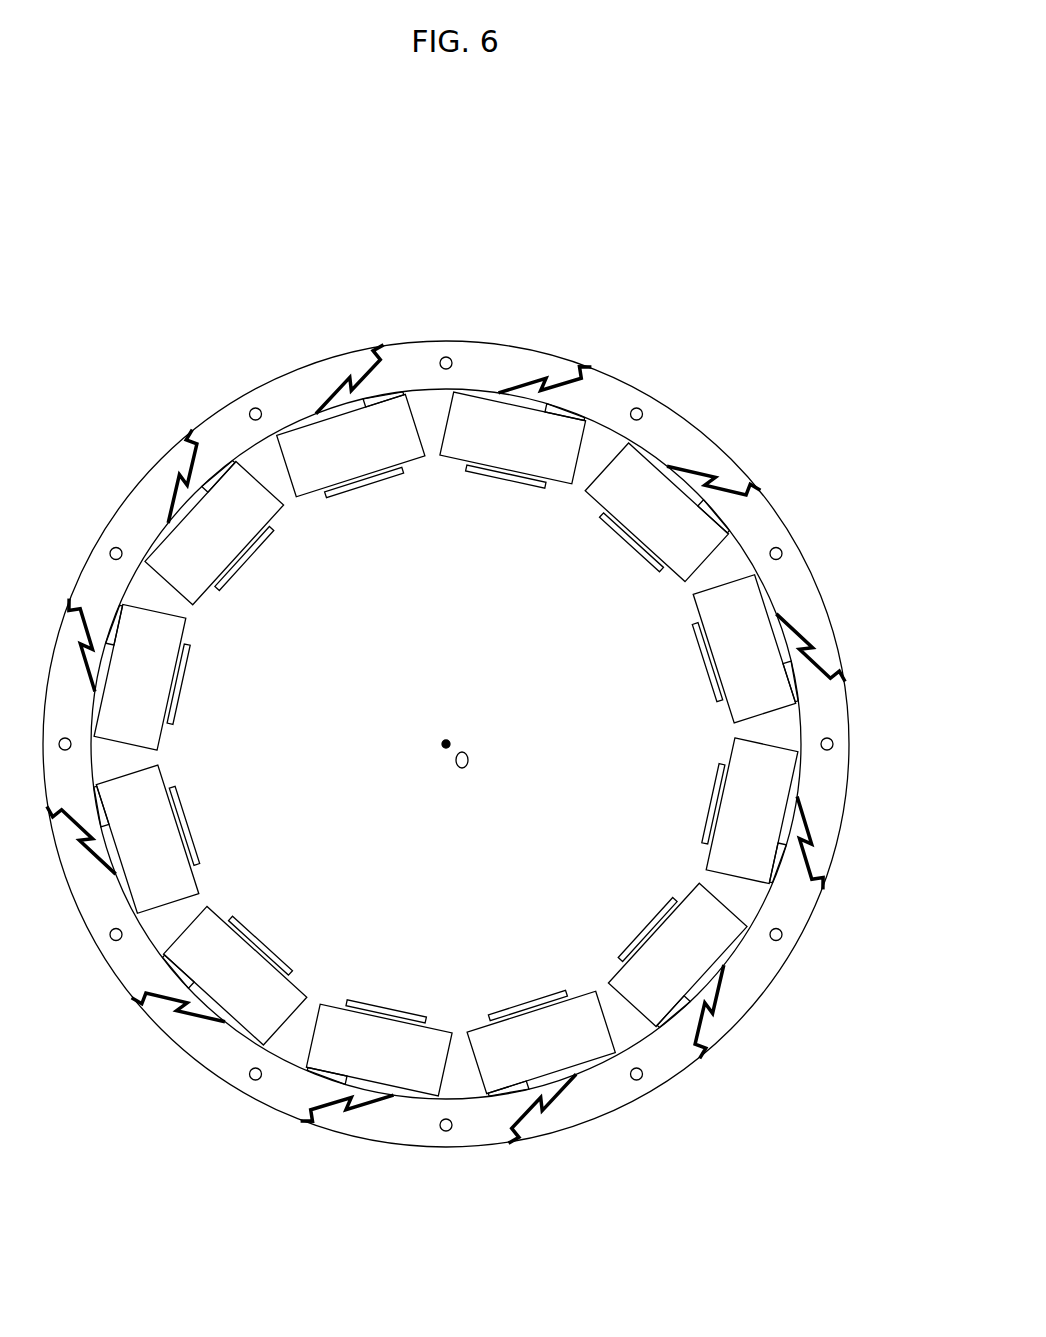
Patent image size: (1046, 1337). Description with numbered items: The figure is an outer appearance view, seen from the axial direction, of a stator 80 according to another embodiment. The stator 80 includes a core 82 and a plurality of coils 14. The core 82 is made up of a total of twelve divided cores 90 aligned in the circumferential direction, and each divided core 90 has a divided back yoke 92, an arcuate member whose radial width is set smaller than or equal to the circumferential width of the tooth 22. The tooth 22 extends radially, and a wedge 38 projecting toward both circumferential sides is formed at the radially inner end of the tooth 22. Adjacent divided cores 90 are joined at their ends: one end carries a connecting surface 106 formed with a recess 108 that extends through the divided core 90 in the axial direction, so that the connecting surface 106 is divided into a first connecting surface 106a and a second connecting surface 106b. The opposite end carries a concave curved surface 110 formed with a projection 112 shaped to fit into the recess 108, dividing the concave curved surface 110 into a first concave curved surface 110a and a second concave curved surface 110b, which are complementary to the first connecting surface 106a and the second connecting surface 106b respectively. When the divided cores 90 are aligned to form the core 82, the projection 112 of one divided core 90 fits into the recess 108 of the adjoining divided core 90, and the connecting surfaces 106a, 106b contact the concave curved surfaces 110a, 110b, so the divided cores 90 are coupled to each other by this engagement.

The stator 80 is at (826, 101).
The core 82 is at (448, 300).
The divided core 90 is at (656, 390).
The divided back yoke 92 is at (282, 400).
The connecting surface 106 is at (765, 433).
The first connecting surface 106a is at (797, 630).
The second connecting surface 106b is at (843, 663).
The recess 108 is at (580, 405).
The concave curved surface 110 is at (238, 240).
The first concave curved surface 110a is at (342, 395).
The second concave curved surface 110b is at (388, 342).
The projection 112 is at (580, 405).
The coil 14 is at (562, 477).
The tooth 22 is at (365, 490).
The wedge 38 is at (327, 493).